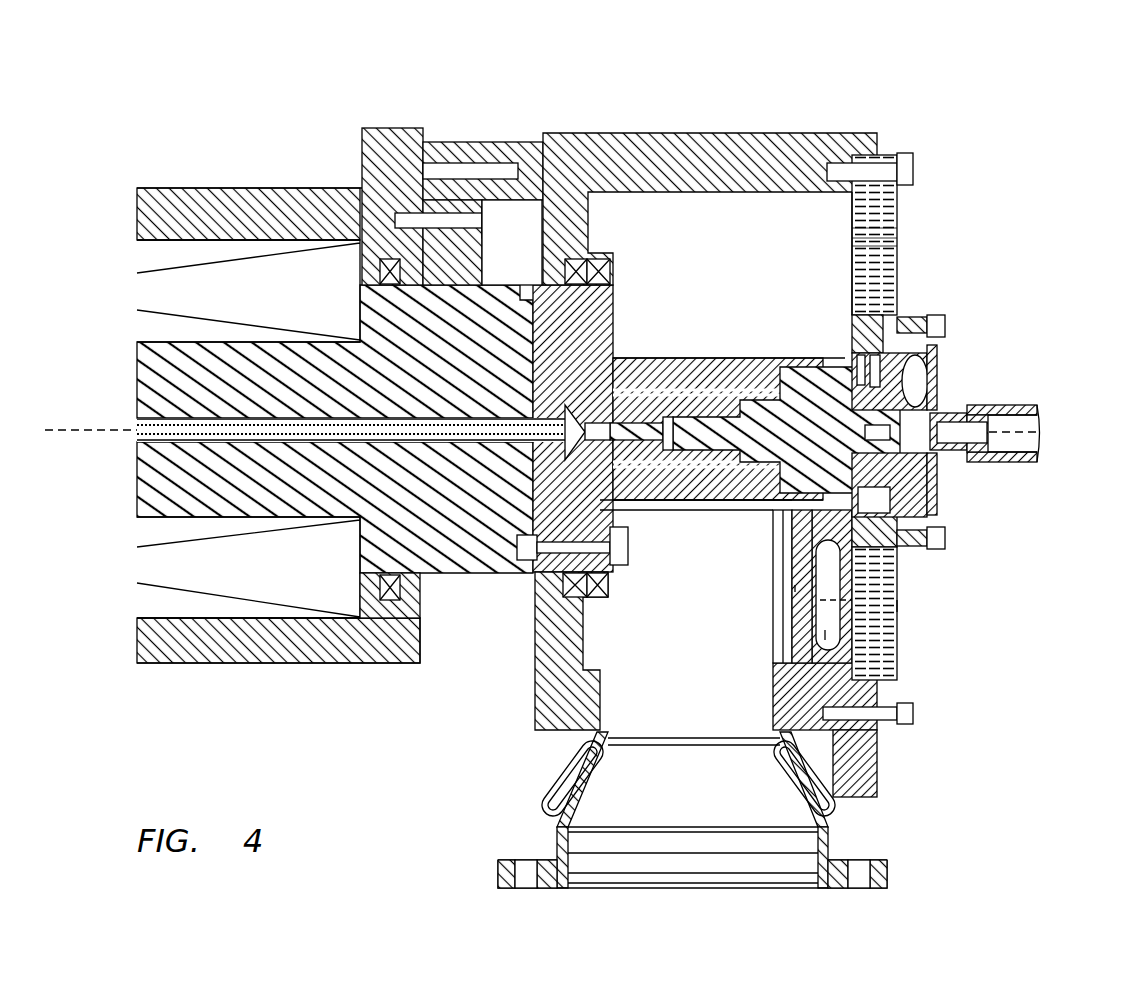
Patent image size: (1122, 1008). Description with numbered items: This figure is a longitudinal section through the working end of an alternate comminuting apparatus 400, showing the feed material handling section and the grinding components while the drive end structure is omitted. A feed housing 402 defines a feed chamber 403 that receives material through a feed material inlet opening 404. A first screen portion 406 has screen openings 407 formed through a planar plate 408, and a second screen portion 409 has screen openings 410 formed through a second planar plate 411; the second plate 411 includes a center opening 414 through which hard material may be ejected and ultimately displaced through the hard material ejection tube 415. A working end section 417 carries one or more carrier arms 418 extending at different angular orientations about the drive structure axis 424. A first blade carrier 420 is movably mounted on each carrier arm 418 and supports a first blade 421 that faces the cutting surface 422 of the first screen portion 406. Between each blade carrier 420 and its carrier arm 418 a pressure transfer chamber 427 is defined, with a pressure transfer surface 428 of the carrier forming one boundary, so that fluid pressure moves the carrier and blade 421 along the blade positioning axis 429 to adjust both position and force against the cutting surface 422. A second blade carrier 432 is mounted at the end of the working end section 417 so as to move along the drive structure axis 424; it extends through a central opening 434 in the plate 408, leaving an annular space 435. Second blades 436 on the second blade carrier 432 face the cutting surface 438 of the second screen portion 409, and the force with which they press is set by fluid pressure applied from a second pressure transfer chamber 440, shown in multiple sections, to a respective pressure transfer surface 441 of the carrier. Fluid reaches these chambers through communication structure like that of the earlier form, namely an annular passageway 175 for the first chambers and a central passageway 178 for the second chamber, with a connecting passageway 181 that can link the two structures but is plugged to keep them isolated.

The apparatus 400 is at (147, 59).
The feed housing 402 is at (700, 133).
The feed chamber 403 is at (686, 297).
The feed material inlet opening 404 is at (664, 805).
The first screen portion 406 is at (938, 229).
The screen openings 407 is at (898, 246).
The planar plate 408 is at (898, 208).
The second screen portion 409 is at (958, 383).
The screen openings 410 is at (937, 350).
The second planar plate 411 is at (900, 520).
The center opening 414 is at (868, 355).
The hard material ejection tube 415 is at (1035, 405).
The working end section 417 is at (663, 372).
The carrier arm 418 is at (773, 535).
The first blade carrier 420 is at (802, 628).
The first blade 421 is at (828, 636).
The cutting surface 422 is at (852, 230).
The drive structure axis 424 is at (80, 420).
The pressure transfer chamber 427 is at (792, 571).
The pressure transfer surface 428 is at (797, 589).
The blade positioning axis 429 is at (898, 605).
The second blade carrier 432 is at (745, 410).
The central opening 434 is at (946, 546).
The annular space 435 is at (890, 497).
The second blades 436 is at (920, 380).
The cutting surface 438 is at (917, 345).
The second pressure transfer chamber 440 is at (800, 383).
The pressure transfer surface 441 is at (821, 378).
The annular passageway 175 is at (288, 423).
The central passageway 178 is at (303, 436).
The connecting passageway 181 is at (585, 445).